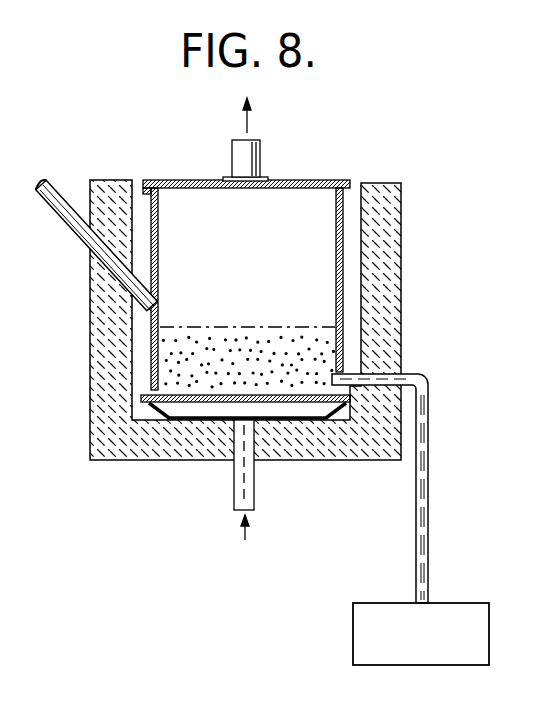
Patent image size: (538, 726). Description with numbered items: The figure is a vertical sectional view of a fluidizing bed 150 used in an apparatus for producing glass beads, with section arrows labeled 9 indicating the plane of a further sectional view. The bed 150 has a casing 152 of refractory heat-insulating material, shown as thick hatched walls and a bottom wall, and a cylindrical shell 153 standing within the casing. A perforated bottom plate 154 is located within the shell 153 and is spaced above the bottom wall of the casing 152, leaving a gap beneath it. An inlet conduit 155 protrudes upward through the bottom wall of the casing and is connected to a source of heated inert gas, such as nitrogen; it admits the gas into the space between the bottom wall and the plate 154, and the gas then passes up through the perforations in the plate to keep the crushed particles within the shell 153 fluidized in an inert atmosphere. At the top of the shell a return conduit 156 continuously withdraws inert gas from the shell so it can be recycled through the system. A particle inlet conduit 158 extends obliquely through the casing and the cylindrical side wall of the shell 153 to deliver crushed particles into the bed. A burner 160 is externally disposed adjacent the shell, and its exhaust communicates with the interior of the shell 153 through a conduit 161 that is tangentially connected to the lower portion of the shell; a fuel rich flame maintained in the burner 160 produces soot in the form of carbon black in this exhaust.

The fluidizing bed 150 is at (393, 179).
The casing 152 is at (401, 245).
The cylindrical shell 153 is at (343, 288).
The perforated bottom plate 154 is at (207, 404).
The inlet conduit 155 is at (257, 497).
The return conduit 156 is at (262, 151).
The particle inlet conduit 158 is at (60, 183).
The burner 160 is at (470, 603).
The conduit 161 is at (430, 497).
The section line 9 is at (80, 340).